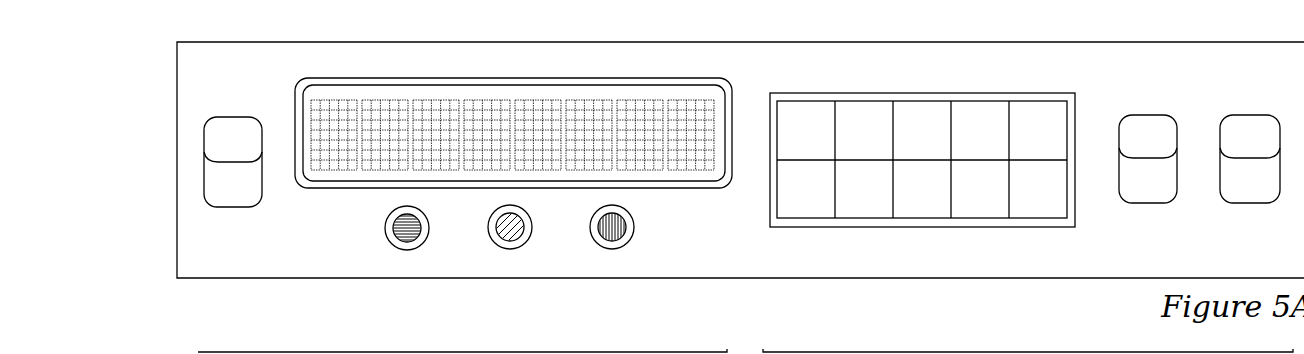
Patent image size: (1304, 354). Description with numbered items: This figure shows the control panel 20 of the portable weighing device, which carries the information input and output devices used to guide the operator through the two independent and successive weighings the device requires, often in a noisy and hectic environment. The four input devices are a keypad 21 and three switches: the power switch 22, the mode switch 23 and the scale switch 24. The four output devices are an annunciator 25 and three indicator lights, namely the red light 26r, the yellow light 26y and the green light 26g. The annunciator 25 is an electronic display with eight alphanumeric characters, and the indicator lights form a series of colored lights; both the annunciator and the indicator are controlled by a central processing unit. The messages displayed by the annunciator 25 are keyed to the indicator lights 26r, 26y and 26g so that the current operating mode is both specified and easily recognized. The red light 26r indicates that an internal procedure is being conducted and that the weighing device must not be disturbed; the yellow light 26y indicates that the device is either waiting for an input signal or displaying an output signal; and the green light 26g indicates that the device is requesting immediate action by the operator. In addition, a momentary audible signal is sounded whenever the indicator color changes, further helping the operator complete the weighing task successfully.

The control panel 20 is at (233, 272).
The keypad 21 is at (872, 227).
The power switch 22 is at (1220, 203).
The mode switch 23 is at (1119, 203).
The scale switch 24 is at (262, 205).
The annunciator 25 is at (690, 188).
The red indicator light 26r is at (407, 250).
The yellow indicator light 26y is at (510, 249).
The green indicator light 26g is at (612, 249).